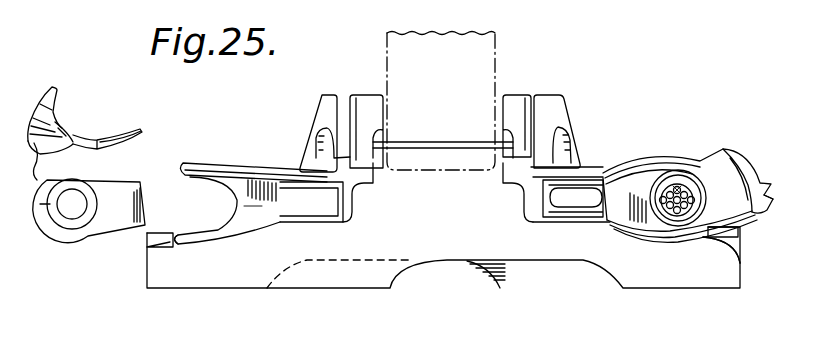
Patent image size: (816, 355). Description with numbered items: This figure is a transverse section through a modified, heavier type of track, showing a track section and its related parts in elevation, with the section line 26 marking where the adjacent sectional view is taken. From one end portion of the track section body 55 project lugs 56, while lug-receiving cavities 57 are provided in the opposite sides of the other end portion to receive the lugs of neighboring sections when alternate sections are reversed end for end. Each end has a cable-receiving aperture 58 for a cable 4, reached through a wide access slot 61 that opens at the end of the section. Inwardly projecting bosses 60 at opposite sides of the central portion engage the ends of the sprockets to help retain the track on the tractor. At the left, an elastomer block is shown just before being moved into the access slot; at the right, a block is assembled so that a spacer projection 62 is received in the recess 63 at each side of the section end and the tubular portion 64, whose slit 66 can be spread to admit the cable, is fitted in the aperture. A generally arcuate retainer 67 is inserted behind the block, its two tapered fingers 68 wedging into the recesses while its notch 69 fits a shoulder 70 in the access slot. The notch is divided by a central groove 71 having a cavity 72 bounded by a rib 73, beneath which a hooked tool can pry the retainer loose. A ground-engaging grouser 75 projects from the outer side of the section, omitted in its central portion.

The cable 4 is at (680, 187).
The section line 26— 26 is at (456, 67).
The track section body 55 is at (352, 249).
The lugs 56 is at (597, 183).
The lug-receiving cavities 57 is at (295, 193).
The cable-receiving aperture 58 is at (237, 200).
The bosses 60 is at (362, 96).
The access slot 61 is at (180, 233).
The spacer projections 62 is at (110, 215).
The recesses 63 is at (262, 219).
The tubular portion 64 is at (701, 177).
The slit 66 is at (690, 198).
The retainer 67 is at (760, 167).
The fingers 68 is at (740, 263).
The notch 69 is at (402, 200).
The shoulder 70 is at (737, 232).
The groove 71 is at (60, 148).
The cavity 72 is at (63, 125).
The rib 73 is at (25, 161).
The grouser 75 is at (205, 277).